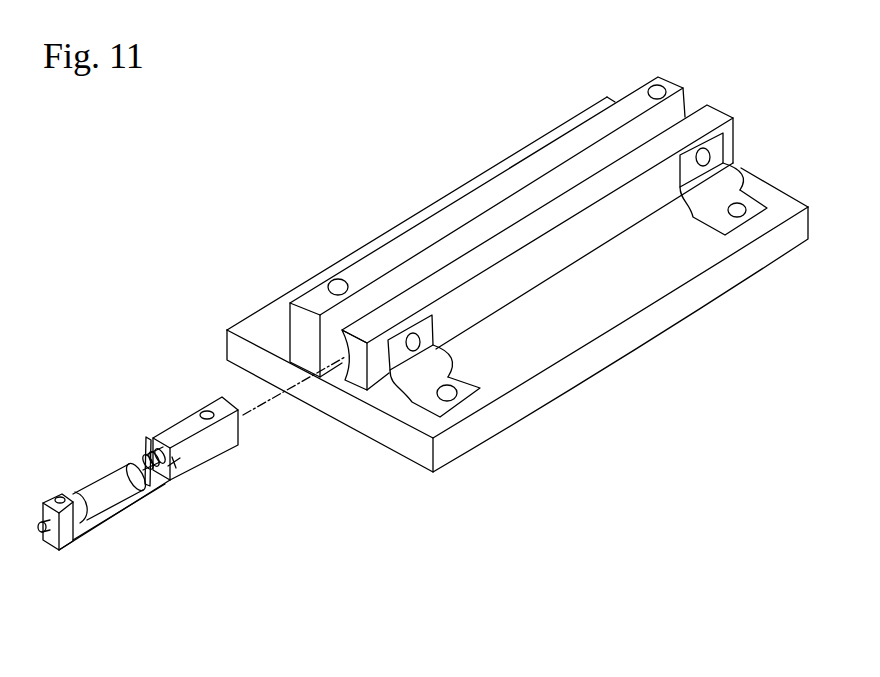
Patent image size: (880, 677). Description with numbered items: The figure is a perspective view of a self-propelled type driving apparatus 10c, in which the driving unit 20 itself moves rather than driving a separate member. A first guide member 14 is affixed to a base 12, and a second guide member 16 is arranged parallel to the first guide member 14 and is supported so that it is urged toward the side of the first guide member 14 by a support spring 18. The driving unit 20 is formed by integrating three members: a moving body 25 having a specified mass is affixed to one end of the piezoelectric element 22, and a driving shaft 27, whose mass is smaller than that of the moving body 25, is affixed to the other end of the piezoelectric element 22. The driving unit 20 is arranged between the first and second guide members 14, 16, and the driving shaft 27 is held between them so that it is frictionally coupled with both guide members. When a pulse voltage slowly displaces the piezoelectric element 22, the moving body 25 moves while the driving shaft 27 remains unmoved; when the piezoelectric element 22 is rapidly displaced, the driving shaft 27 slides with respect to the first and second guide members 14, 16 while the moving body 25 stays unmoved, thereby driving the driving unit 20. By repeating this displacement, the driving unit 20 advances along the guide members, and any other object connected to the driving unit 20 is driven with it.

The self-propelled type driving apparatus 10c is at (391, 133).
The base 12 is at (642, 347).
The first guide member 14 is at (673, 82).
The second guide member 16 is at (717, 115).
The support spring 18 is at (725, 180).
The driving unit 20 is at (153, 517).
The piezoelectric element 22 is at (147, 460).
The moving body 25 is at (216, 450).
The driving shaft 27 is at (97, 475).